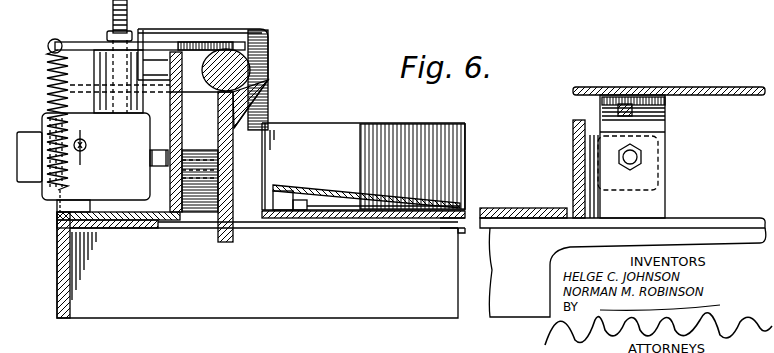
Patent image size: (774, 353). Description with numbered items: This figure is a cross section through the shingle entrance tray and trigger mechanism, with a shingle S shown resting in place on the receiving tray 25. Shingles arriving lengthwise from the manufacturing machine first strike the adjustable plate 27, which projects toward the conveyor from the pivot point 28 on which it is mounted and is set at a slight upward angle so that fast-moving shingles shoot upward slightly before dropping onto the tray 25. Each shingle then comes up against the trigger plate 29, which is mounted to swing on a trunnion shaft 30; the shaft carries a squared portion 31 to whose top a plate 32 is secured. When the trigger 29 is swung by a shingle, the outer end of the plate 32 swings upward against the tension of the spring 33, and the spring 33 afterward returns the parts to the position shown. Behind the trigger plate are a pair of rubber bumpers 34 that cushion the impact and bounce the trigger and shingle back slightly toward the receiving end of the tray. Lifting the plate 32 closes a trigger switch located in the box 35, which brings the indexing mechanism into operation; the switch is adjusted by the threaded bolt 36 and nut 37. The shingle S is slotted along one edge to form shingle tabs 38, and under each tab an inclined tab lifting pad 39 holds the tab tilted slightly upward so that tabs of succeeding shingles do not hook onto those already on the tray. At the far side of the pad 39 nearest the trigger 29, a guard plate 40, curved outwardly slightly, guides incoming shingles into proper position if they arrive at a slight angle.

The shingle receiving tray 25 is at (510, 229).
The adjustable plate 27 is at (704, 88).
The pivot point 28 is at (644, 157).
The trigger plate 29 is at (235, 168).
The trunnion shaft 30 is at (268, 71).
The squared portion 31 is at (272, 46).
The plate 32 is at (178, 44).
The spring 33 is at (47, 74).
The rubber bumpers 34 is at (207, 123).
The box 35 is at (124, 144).
The threaded bolt 36 is at (113, 13).
The nut 37 is at (107, 33).
The shingle tabs 38 is at (320, 192).
The inclined tab lifting pad 39 is at (306, 212).
The guard plate 40 is at (328, 128).
The shingle S is at (348, 212).